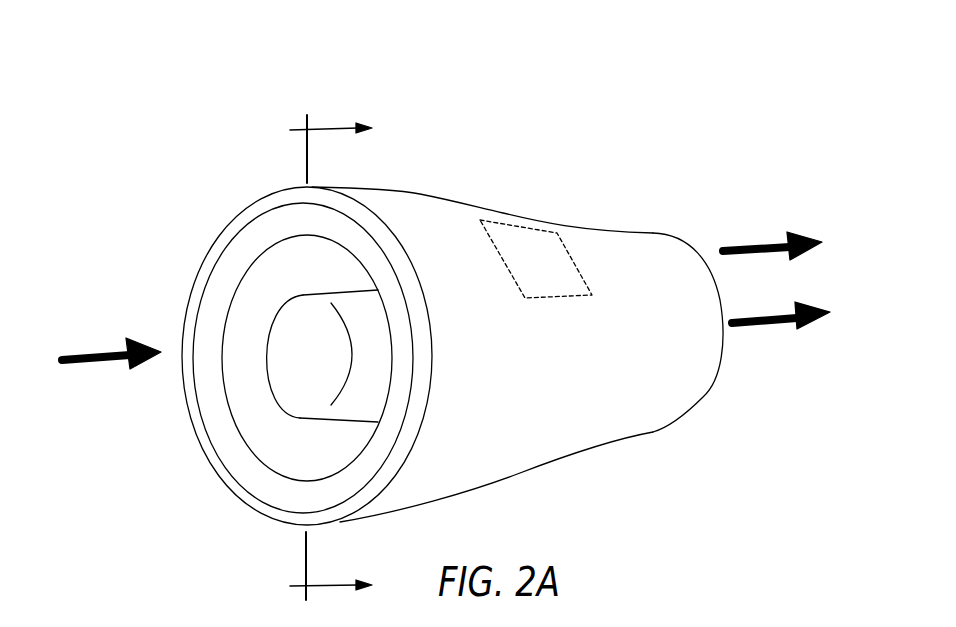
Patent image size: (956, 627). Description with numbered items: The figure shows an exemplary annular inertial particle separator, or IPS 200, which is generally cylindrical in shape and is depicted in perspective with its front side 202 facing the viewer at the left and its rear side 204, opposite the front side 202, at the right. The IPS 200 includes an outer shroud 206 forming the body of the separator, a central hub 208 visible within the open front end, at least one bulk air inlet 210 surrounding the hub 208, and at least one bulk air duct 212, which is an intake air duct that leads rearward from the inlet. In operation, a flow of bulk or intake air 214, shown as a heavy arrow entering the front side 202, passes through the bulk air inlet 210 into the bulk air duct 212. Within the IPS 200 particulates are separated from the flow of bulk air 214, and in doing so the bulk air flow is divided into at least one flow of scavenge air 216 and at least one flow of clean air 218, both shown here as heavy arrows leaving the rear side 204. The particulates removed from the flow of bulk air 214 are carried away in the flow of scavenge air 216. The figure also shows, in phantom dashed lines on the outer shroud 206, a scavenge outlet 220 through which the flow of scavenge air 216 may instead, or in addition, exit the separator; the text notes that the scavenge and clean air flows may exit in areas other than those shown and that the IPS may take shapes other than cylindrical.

The annular IPS 200 is at (442, 82).
The front side 202 is at (168, 500).
The rear side 204 is at (707, 423).
The outer shroud 206 is at (502, 212).
The hub 208 is at (322, 372).
The bulk air inlet 210 is at (265, 290).
The bulk air duct 212 is at (303, 294).
The flow of bulk air 214 is at (97, 363).
The flow of scavenge air 216 is at (753, 243).
The flow of clean air 218 is at (758, 327).
The scavenge outlet 220 is at (553, 297).